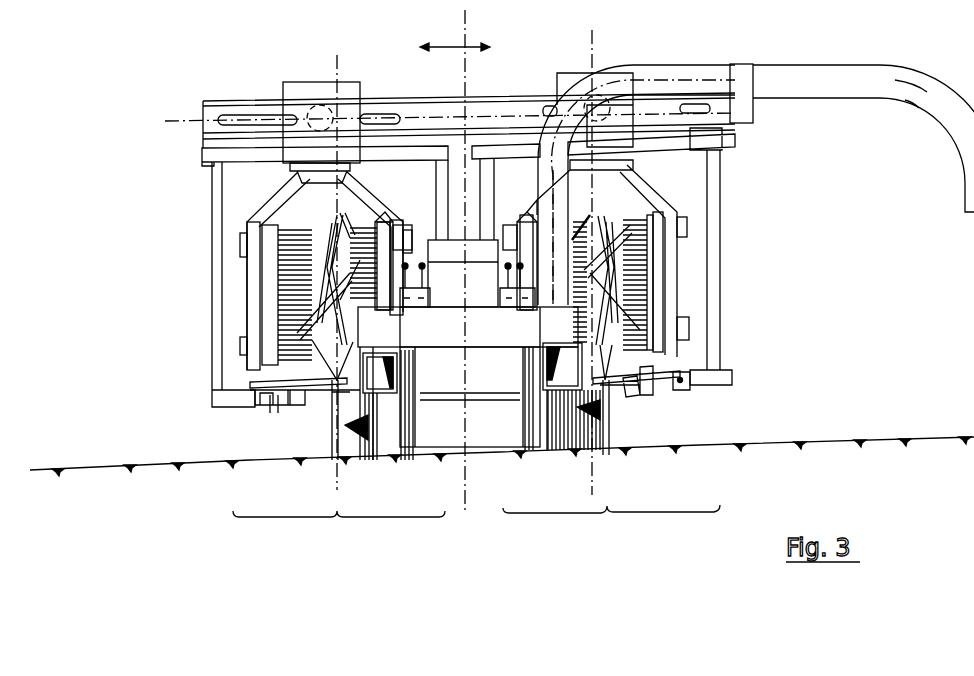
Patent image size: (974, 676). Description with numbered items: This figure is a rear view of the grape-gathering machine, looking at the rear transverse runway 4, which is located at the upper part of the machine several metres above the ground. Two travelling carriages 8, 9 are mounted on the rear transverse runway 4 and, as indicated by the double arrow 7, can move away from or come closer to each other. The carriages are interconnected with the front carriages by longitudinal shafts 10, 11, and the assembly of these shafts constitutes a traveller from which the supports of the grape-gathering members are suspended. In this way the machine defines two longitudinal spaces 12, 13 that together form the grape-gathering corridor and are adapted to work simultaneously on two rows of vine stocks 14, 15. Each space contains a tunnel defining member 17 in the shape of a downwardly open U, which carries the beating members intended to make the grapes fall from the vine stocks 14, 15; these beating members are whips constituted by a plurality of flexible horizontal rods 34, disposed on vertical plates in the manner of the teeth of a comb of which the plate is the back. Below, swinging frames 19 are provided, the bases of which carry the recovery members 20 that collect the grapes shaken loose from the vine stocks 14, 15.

The rear transverse runway 4 is at (210, 118).
The double arrow 7 is at (455, 38).
The travelling carriage 8 is at (562, 83).
The travelling carriage 9 is at (305, 90).
The longitudinal shaft 10 is at (599, 113).
The longitudinal shaft 11 is at (330, 111).
The longitudinal space 12 is at (611, 520).
The longitudinal space 13 is at (339, 528).
The vine stock 14 is at (643, 294).
The vine stock 15 is at (333, 341).
The tunnel defining member 17 is at (278, 193).
The swinging frame 19 is at (223, 361).
The recovery member 20 is at (282, 384).
The flexible horizontal rod 34 is at (280, 260).